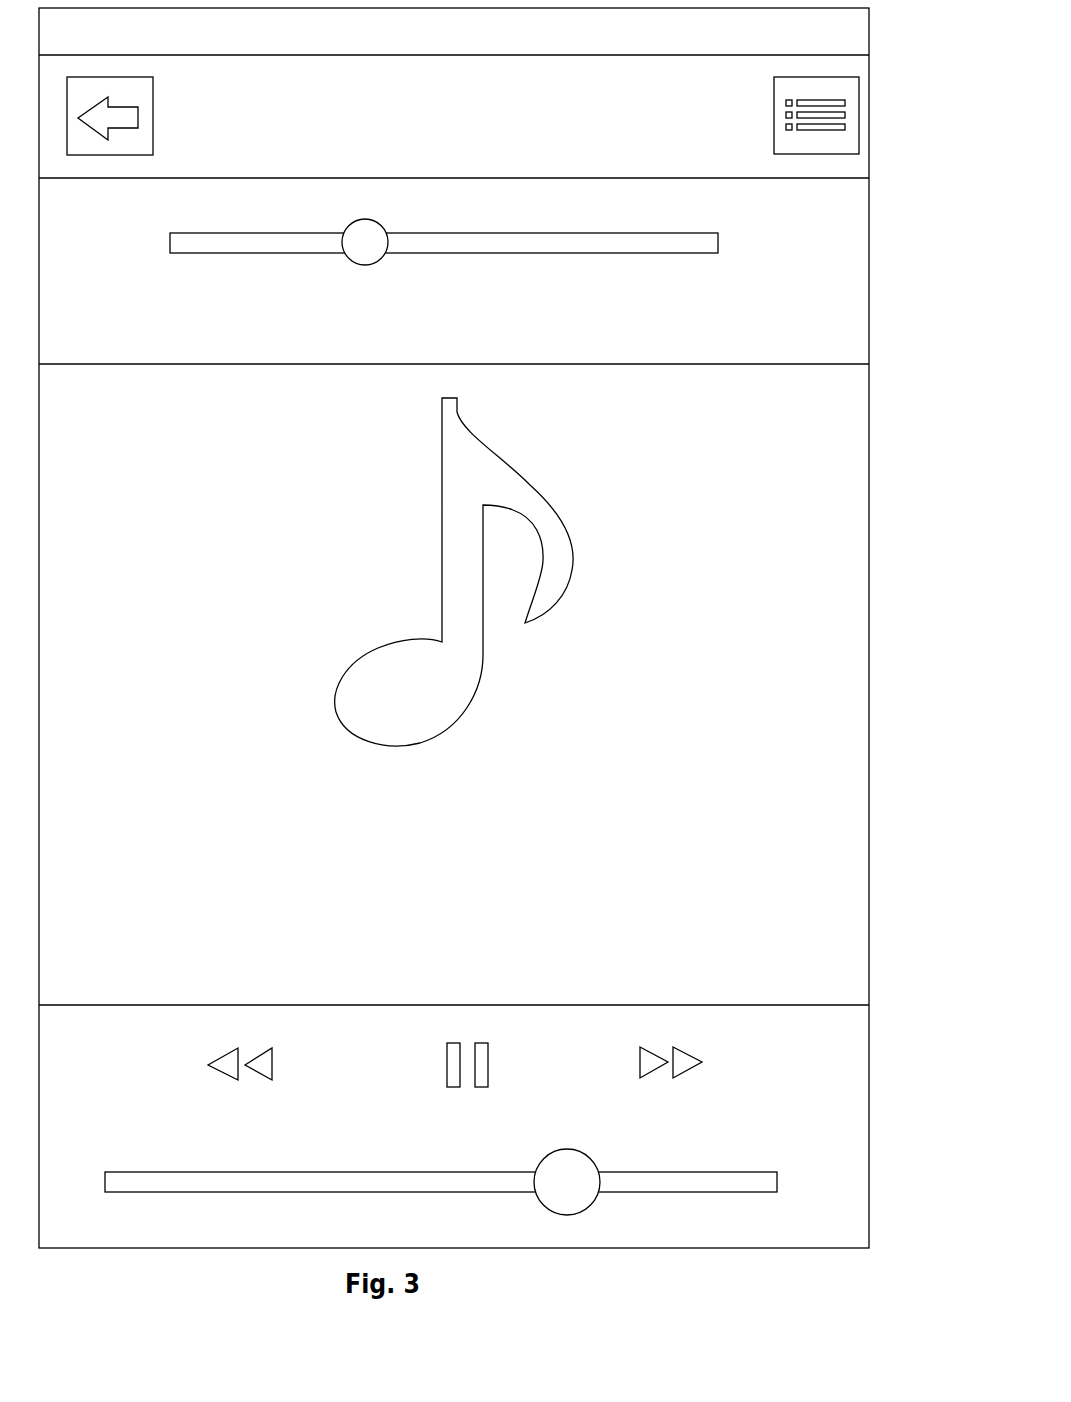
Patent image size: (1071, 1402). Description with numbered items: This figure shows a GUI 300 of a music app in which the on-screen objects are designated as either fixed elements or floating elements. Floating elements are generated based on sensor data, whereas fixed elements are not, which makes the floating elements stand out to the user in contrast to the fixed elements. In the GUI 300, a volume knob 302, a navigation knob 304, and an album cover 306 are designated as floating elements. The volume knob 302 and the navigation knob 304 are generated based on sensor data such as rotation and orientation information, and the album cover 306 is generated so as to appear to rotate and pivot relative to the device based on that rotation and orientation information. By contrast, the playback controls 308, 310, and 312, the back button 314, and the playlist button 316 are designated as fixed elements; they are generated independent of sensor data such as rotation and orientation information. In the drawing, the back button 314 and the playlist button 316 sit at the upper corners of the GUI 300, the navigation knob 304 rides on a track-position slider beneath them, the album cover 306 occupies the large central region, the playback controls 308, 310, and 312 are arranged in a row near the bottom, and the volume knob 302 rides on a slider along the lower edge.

The GUI 300 is at (801, 1267).
The volume knob 302 is at (590, 1156).
The navigation knob 304 is at (378, 262).
The album cover 306 is at (870, 873).
The playback control 308 is at (272, 1050).
The playback control 310 is at (490, 1058).
The playback control 312 is at (698, 1052).
The back button 314 is at (153, 120).
The playlist button 316 is at (774, 125).